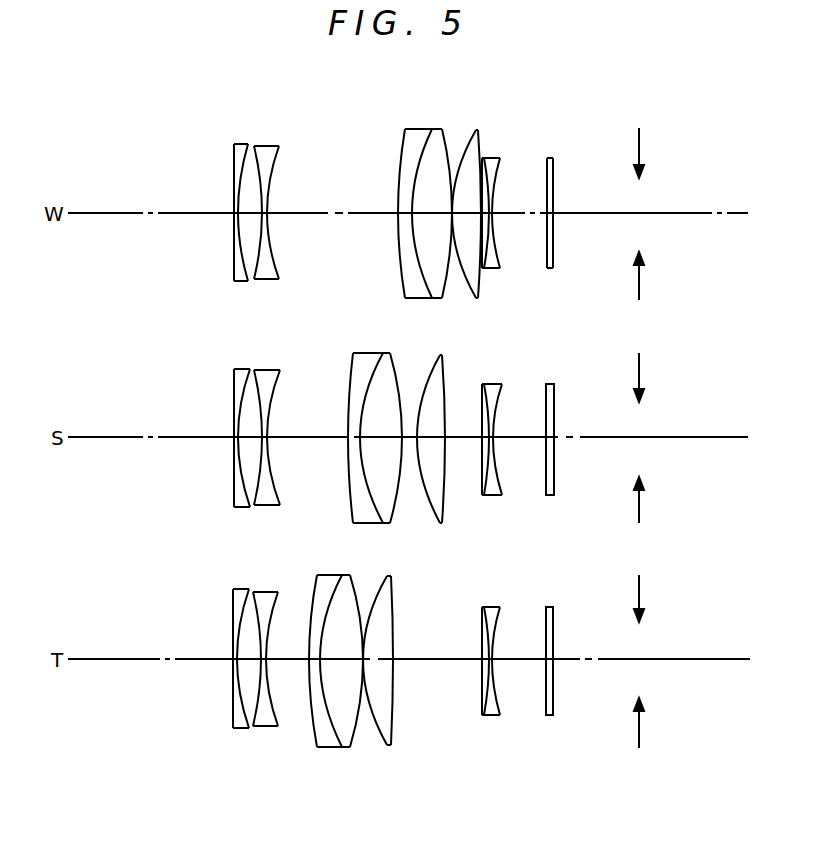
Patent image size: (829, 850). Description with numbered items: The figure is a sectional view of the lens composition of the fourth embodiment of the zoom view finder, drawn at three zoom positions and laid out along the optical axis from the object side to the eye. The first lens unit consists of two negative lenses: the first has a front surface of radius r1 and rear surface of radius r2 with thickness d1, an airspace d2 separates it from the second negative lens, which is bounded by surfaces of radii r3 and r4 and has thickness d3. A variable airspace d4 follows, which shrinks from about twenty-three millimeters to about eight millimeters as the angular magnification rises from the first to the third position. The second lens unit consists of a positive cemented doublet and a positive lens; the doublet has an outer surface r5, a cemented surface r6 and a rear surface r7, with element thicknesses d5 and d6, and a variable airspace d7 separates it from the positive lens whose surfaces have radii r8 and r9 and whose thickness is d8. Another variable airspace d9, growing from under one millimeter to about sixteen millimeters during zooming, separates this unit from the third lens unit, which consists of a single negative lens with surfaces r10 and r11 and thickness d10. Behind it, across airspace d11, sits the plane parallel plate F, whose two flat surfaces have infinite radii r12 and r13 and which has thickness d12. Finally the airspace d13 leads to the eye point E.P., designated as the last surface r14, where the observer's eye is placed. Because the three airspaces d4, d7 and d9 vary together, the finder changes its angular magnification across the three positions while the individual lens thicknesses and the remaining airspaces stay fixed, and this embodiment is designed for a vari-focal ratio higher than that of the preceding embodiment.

The radius of curvature of first lens surface r1 is at (234, 152).
The radius of curvature of second lens surface r2 is at (240, 146).
The radius of curvature of third lens surface r3 is at (257, 150).
The radius of curvature of fourth lens surface r4 is at (280, 150).
The radius of curvature of fifth lens surface r5 is at (405, 138).
The radius of curvature of sixth lens surface r6 is at (428, 141).
The radius of curvature of seventh lens surface r7 is at (452, 144).
The radius of curvature of eighth lens surface r8 is at (462, 147).
The radius of curvature of ninth lens surface r9 is at (468, 148).
The radius of curvature of tenth lens surface r10 is at (490, 160).
The radius of curvature of eleventh lens surface r11 is at (508, 154).
The radius of curvature of front surface of plane parallel plate r12 is at (543, 154).
The radius of curvature of rear surface of plane parallel plate r13 is at (560, 151).
The eye point surface r14 is at (636, 146).
The thickness of first lens d1 is at (236, 222).
The airspace between first and second lenses d2 is at (241, 207).
The thickness of second lens d3 is at (267, 223).
The variable airspace between first and second lens units d4 is at (318, 215).
The thickness of third lens d5 is at (400, 222).
The thickness of fourth lens d6 is at (418, 208).
The variable airspace between doublet and positive lens d7 is at (452, 219).
The thickness of fifth lens d8 is at (468, 216).
The variable airspace between second and third lens units d9 is at (490, 206).
The thickness of sixth lens d10 is at (489, 218).
The airspace between third lens unit and plane parallel plate d11 is at (506, 219).
The thickness of plane parallel plate d12 is at (556, 226).
The airspace between plane parallel plate and eye point d13 is at (598, 213).
The plane parallel plate F is at (556, 256).
The eye point E.P. is at (640, 280).